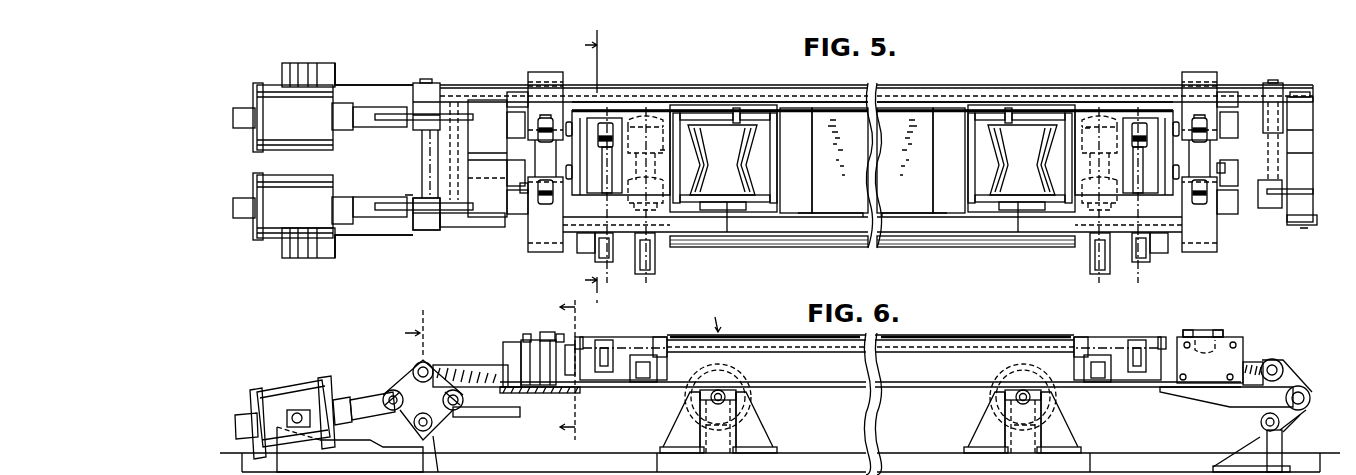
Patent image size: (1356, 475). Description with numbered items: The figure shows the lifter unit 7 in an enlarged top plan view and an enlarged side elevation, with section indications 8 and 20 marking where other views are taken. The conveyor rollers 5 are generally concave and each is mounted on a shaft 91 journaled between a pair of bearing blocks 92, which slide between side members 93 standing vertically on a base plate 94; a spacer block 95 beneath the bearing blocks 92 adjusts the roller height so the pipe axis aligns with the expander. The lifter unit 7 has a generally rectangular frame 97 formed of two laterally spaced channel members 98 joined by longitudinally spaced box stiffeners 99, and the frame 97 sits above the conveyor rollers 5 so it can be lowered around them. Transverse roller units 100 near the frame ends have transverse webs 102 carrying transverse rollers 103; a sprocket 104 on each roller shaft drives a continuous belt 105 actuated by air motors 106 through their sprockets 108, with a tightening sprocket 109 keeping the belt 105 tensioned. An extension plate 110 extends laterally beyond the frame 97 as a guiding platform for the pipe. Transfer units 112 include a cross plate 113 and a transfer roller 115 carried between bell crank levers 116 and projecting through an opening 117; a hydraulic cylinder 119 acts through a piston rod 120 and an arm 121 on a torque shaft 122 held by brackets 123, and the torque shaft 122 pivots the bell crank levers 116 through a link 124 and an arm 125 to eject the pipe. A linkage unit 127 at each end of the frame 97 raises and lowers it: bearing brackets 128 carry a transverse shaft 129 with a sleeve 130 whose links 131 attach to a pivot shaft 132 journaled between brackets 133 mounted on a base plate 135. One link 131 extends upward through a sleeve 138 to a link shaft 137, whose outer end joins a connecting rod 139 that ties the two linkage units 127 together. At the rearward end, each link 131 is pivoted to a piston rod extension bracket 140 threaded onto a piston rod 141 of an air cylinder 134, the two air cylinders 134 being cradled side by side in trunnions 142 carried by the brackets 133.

In FIG. 5, the conveyor roller 5 is at (720, 127).
In FIG. 6, the conveyor roller 5 is at (757, 395).
In FIG. 6, the lifter unit 7 is at (563, 327).
In FIG. 6, the section line 8 is at (571, 371).
In FIG. 5, the section line 20 is at (601, 160).
In FIG. 6, the section line 20 is at (608, 293).
In FIG. 5, the shaft 91 is at (727, 212).
In FIG. 6, the shaft 91 is at (710, 397).
In FIG. 5, the bearing block 92 is at (802, 208).
In FIG. 6, the bearing block 92 is at (703, 403).
In FIG. 5, the side member 93 is at (777, 116).
In FIG. 6, the side member 93 is at (737, 415).
In FIG. 5, the base plate 94 is at (782, 140).
In FIG. 6, the base plate 94 is at (682, 440).
In FIG. 6, the spacer block 95 is at (720, 447).
In FIG. 5, the frame 97 is at (953, 237).
In FIG. 6, the frame 97 is at (913, 378).
In FIG. 5, the channel member 98 is at (823, 223).
In FIG. 6, the channel member 98 is at (848, 378).
In FIG. 5, the box stiffener 99 is at (812, 168).
In FIG. 5, the transverse roller unit 100 is at (545, 64).
In FIG. 5, the transverse web 102 is at (520, 188).
In FIG. 6, the transverse web 102 is at (525, 335).
In FIG. 5, the transverse roller 103 is at (546, 117).
In FIG. 6, the transverse roller 103 is at (541, 333).
In FIG. 5, the sprocket 104 is at (569, 122).
In FIG. 6, the sprocket 104 is at (577, 333).
In FIG. 5, the continuous belt 105 is at (585, 135).
In FIG. 6, the continuous belt 105 is at (578, 372).
In FIG. 5, the air motor 106 is at (519, 103).
In FIG. 6, the air motor 106 is at (530, 382).
In FIG. 6, the sprocket 108 is at (579, 389).
In FIG. 5, the tightening sprocket 109 is at (608, 182).
In FIG. 5, the extension plate 110 is at (552, 73).
In FIG. 5, the transfer unit 112 is at (625, 110).
In FIG. 5, the cross plate 113 is at (640, 110).
In FIG. 5, the transfer roller 115 is at (610, 123).
In FIG. 5, the bell crank lever 116 is at (614, 140).
In FIG. 5, the opening 117 is at (648, 186).
In FIG. 5, the hydraulic cylinder 119 is at (668, 152).
In FIG. 5, the piston rod 120 is at (648, 227).
In FIG. 5, the arm 121 is at (656, 262).
In FIG. 6, the arm 121 is at (637, 381).
In FIG. 5, the torque shaft 122 is at (820, 243).
In FIG. 6, the torque shaft 122 is at (952, 345).
In FIG. 6, the bracket 123 is at (665, 331).
In FIG. 5, the link 124 is at (580, 235).
In FIG. 5, the arm 125 is at (607, 262).
In FIG. 6, the arm 125 is at (612, 343).
In FIG. 5, the linkage unit 127 is at (405, 195).
In FIG. 6, the linkage unit 127 is at (402, 372).
In FIG. 5, the bearing bracket 128 is at (487, 103).
In FIG. 6, the bearing bracket 128 is at (490, 417).
In FIG. 5, the transverse shaft 129 is at (472, 178).
In FIG. 6, the transverse shaft 129 is at (453, 411).
In FIG. 5, the sleeve 130 is at (468, 153).
In FIG. 5, the link 131 is at (397, 122).
In FIG. 6, the link 131 is at (402, 410).
In FIG. 6, the pivot shaft 132 is at (420, 426).
In FIG. 5, the bracket 133 is at (436, 231).
In FIG. 6, the bracket 133 is at (437, 442).
In FIG. 5, the air cylinder 134 is at (268, 192).
In FIG. 6, the air cylinder 134 is at (297, 389).
In FIG. 5, the base plate 135 is at (372, 88).
In FIG. 6, the base plate 135 is at (355, 467).
In FIG. 5, the link shaft 137 is at (428, 79).
In FIG. 6, the link shaft 137 is at (430, 366).
In FIG. 5, the sleeve 138 is at (417, 100).
In FIG. 5, the connecting rod 139 is at (476, 85).
In FIG. 6, the connecting rod 139 is at (481, 366).
In FIG. 5, the piston rod extension bracket 140 is at (365, 127).
In FIG. 6, the piston rod extension bracket 140 is at (367, 392).
In FIG. 5, the piston rod 141 is at (352, 108).
In FIG. 6, the piston rod 141 is at (357, 397).
In FIG. 5, the trunnion 142 is at (290, 68).
In FIG. 6, the trunnion 142 is at (292, 412).